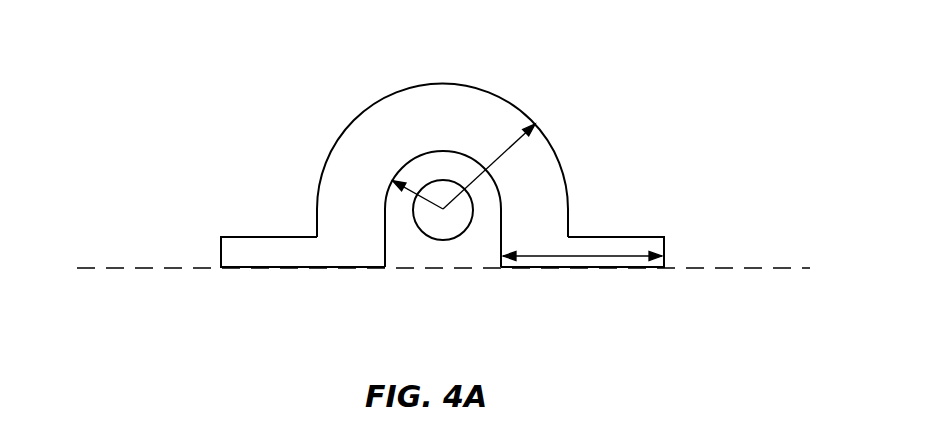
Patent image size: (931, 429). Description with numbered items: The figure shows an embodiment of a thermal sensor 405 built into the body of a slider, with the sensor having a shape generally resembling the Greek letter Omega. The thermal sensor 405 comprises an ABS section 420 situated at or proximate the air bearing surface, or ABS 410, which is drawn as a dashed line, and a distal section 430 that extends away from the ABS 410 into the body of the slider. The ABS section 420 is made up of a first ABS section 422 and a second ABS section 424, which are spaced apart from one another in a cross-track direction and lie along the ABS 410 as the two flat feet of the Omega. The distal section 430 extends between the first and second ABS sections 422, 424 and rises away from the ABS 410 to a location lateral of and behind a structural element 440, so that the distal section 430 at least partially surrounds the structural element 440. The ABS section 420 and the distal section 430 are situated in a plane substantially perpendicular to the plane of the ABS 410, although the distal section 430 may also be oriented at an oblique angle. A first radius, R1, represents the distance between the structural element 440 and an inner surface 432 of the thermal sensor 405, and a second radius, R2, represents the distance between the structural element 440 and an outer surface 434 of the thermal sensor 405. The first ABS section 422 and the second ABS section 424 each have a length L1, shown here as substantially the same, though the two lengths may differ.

The thermal sensor 405 is at (459, 199).
The ABS 410 is at (95, 268).
The ABS section 420 is at (269, 237).
The first ABS section 422 is at (293, 268).
The second ABS section 424 is at (633, 265).
The distal section 430 is at (447, 100).
The inner surface 432 is at (436, 150).
The outer surface 434 is at (523, 113).
The structural element 440 is at (438, 240).